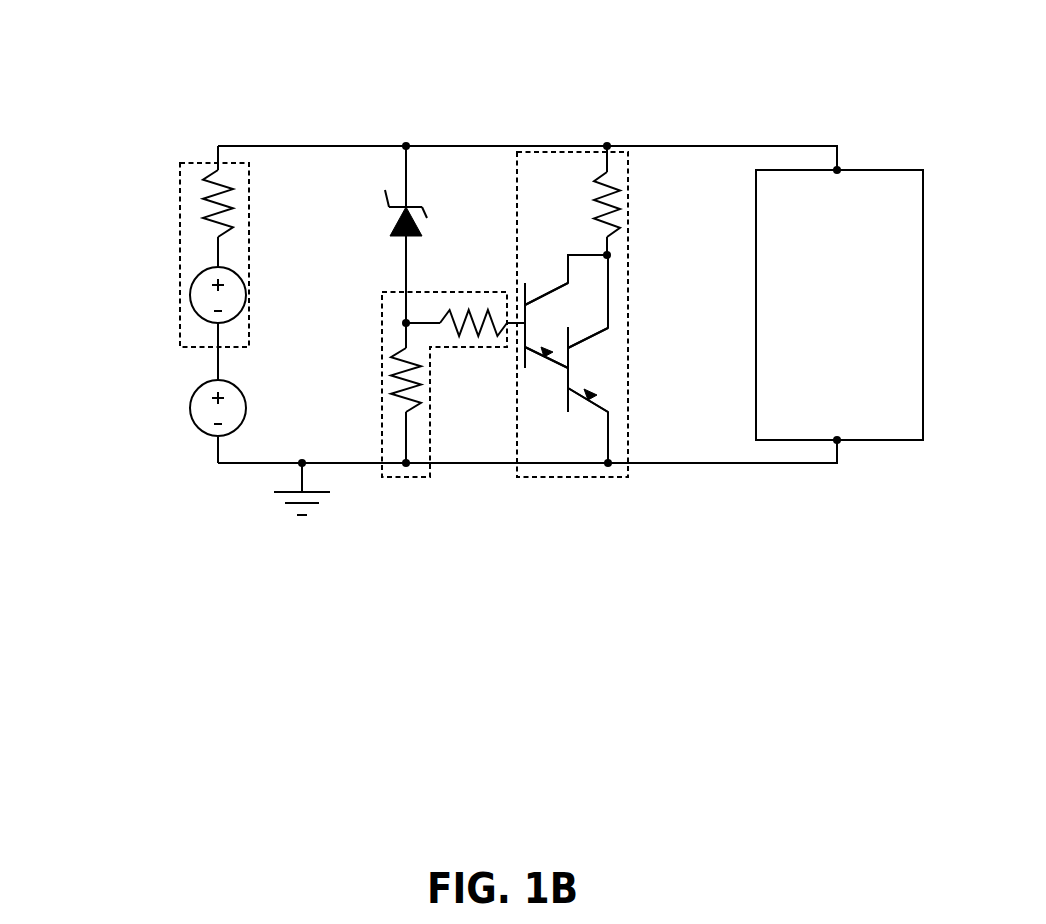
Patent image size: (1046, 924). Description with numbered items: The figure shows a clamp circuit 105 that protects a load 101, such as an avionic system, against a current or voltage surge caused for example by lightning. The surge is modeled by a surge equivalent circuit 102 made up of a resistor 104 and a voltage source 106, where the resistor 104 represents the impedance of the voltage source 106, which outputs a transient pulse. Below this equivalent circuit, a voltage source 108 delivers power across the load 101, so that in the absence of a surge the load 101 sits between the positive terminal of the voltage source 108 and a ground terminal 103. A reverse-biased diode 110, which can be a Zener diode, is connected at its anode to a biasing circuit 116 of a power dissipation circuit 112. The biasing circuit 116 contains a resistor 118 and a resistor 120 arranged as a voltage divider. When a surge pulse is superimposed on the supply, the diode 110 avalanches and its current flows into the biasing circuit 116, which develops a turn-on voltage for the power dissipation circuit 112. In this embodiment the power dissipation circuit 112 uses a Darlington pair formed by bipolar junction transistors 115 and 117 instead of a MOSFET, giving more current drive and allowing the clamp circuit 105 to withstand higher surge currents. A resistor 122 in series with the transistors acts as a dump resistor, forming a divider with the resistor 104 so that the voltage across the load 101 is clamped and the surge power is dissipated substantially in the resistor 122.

The load 101 is at (839, 305).
The surge equivalent circuit 102 is at (180, 178).
The ground terminal 103 is at (275, 491).
The resistor 104 is at (232, 185).
The clamp circuit 105 is at (467, 96).
The voltage source 106 is at (247, 298).
The voltage source 108 is at (190, 405).
The diode 110 is at (422, 208).
The power dissipation circuit 112 is at (542, 478).
The bipolar junction transistor 115 is at (577, 372).
The biasing circuit 116 is at (420, 478).
The bipolar junction transistor 117 is at (540, 293).
The resistor 118 is at (397, 376).
The resistor 120 is at (475, 313).
The resistor 122 is at (622, 190).